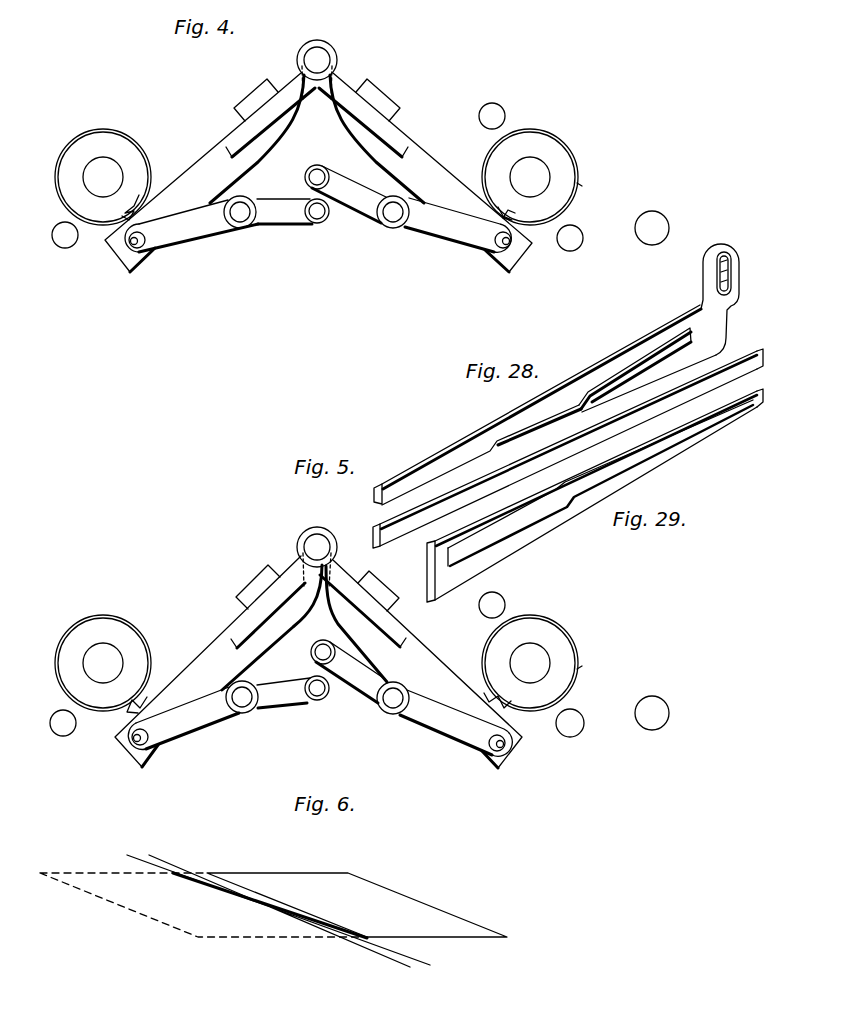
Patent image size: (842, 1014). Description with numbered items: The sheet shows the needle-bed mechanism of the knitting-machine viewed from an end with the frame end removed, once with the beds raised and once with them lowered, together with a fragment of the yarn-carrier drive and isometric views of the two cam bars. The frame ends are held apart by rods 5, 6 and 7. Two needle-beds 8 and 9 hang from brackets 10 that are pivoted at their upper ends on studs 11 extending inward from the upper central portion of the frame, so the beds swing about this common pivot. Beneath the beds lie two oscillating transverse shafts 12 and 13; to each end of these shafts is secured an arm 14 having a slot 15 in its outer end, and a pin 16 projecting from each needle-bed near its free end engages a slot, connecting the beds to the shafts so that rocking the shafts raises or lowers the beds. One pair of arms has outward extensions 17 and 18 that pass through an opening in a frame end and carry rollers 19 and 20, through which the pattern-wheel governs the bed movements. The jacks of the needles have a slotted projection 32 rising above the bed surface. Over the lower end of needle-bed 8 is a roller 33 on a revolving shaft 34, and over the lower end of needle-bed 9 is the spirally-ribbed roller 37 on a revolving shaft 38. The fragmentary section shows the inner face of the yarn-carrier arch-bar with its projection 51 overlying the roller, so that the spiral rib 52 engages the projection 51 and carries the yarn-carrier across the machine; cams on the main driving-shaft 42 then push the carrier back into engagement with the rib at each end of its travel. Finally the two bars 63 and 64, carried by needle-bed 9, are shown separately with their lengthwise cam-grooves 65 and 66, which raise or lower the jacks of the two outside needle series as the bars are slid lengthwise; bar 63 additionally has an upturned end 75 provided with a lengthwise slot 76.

In FIG. 4, the rod 5 is at (65, 235).
In FIG. 5, the rod 5 is at (63, 723).
In FIG. 4, the rod 6 is at (492, 116).
In FIG. 5, the rod 6 is at (492, 605).
In FIG. 4, the rod 7 is at (570, 238).
In FIG. 5, the rod 7 is at (570, 723).
In FIG. 4, the needle-bed 8 is at (204, 172).
In FIG. 5, the needle-bed 8 is at (218, 661).
In FIG. 4, the needle-bed 9 is at (431, 172).
In FIG. 5, the needle-bed 9 is at (424, 664).
In FIG. 4, the bracket 10 is at (317, 122).
In FIG. 5, the bracket 10 is at (318, 611).
In FIG. 4, the stud 11 is at (317, 70).
In FIG. 5, the stud 11 is at (317, 557).
In FIG. 4, the transverse shaft 12 is at (240, 212).
In FIG. 5, the transverse shaft 12 is at (242, 697).
In FIG. 4, the transverse shaft 13 is at (393, 212).
In FIG. 5, the transverse shaft 13 is at (393, 698).
In FIG. 4, the arm 14 is at (318, 225).
In FIG. 5, the arm 14 is at (320, 721).
In FIG. 4, the slot 15 is at (320, 234).
In FIG. 5, the slot 15 is at (524, 748).
In FIG. 4, the pin 16 is at (503, 247).
In FIG. 5, the pin 16 is at (134, 742).
In FIG. 4, the outward extension 17 is at (284, 211).
In FIG. 5, the outward extension 17 is at (283, 693).
In FIG. 4, the outward extension 18 is at (349, 194).
In FIG. 5, the outward extension 18 is at (350, 672).
In FIG. 4, the roller 19 is at (317, 218).
In FIG. 5, the roller 19 is at (317, 695).
In FIG. 4, the roller 20 is at (317, 169).
In FIG. 5, the roller 20 is at (323, 645).
In FIG. 4, the slotted projection 32 is at (328, 200).
In FIG. 5, the slotted projection 32 is at (319, 694).
In FIG. 4, the roller 33 is at (103, 177).
In FIG. 5, the roller 33 is at (103, 663).
In FIG. 4, the shaft 34 is at (103, 177).
In FIG. 5, the shaft 34 is at (103, 663).
In FIG. 4, the spirally-ribbed roller 37 is at (530, 177).
In FIG. 5, the spirally-ribbed roller 37 is at (530, 663).
In FIG. 4, the shaft 38 is at (530, 177).
In FIG. 5, the shaft 38 is at (530, 663).
In FIG. 4, the main driving-shaft 42 is at (652, 228).
In FIG. 5, the main driving-shaft 42 is at (652, 713).
In FIG. 6, the projection 51 is at (273, 905).
In FIG. 4, the spiral rib 52 is at (587, 186).
In FIG. 5, the spiral rib 52 is at (587, 662).
In FIG. 6, the spiral rib 52 is at (278, 906).
In FIG. 28, the bar 63 is at (727, 322).
In FIG. 29, the bar 64 is at (427, 564).
In FIG. 28, the cam-groove 65 is at (634, 368).
In FIG. 29, the cam-groove 66 is at (590, 495).
In FIG. 28, the upturned end 75 is at (702, 246).
In FIG. 28, the slot 76 is at (733, 272).